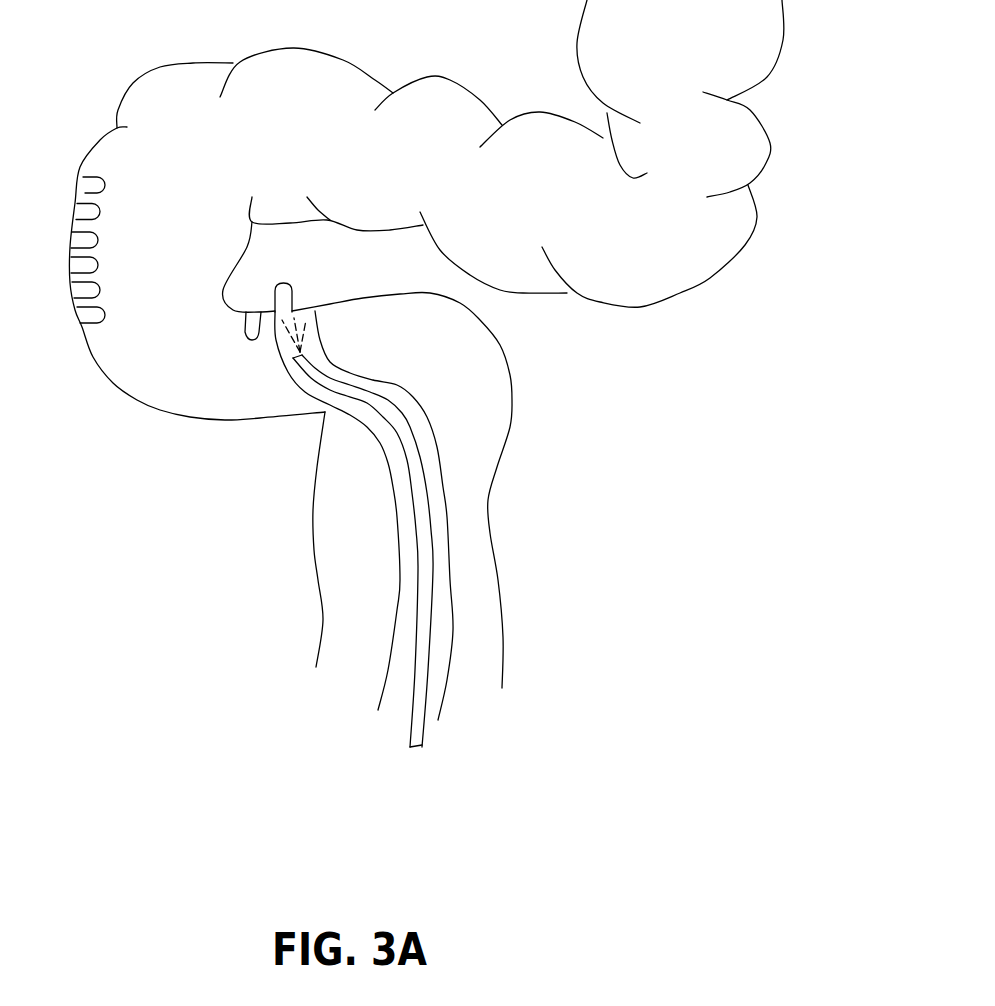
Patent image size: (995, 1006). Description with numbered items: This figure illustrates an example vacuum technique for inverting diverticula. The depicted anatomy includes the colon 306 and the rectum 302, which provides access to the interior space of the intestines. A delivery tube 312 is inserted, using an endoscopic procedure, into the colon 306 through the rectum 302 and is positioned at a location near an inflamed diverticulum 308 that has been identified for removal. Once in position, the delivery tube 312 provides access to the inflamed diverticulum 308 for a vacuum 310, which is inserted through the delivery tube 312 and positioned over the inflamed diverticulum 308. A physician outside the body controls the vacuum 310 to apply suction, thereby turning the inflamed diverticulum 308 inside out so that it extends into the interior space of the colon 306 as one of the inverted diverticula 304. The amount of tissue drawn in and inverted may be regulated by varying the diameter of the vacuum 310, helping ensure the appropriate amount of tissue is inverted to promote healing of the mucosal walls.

The rectum 302 is at (514, 510).
The inverted diverticula 304 is at (258, 306).
The colon 306 is at (433, 63).
The inflamed diverticulum 308 is at (289, 280).
The vacuum 310 is at (310, 337).
The delivery tube 312 is at (450, 662).